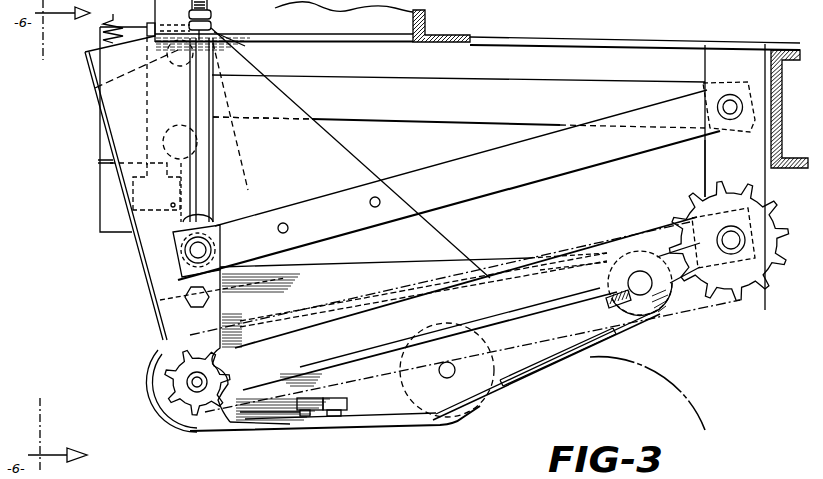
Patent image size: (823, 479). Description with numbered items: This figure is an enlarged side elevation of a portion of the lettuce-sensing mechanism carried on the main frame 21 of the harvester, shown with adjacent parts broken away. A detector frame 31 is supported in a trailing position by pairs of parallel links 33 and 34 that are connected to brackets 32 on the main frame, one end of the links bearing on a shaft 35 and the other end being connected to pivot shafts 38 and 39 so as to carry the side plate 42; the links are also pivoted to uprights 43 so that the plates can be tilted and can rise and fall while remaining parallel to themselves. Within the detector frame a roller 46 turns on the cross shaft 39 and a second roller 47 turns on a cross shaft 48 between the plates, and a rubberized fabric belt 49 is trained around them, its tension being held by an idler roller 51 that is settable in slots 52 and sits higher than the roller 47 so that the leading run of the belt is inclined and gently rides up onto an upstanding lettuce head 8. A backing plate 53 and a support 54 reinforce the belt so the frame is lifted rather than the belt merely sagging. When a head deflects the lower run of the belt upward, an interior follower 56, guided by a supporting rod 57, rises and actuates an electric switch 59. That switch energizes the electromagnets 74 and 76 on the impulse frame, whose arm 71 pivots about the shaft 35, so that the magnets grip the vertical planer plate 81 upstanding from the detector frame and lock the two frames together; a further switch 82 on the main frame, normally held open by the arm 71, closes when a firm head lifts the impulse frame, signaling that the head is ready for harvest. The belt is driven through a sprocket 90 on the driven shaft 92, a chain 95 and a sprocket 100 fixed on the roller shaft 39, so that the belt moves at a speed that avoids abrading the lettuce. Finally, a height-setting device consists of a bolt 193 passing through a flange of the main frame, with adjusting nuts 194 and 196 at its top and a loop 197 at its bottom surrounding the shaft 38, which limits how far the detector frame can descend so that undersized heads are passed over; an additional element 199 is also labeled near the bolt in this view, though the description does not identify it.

The lettuce head 8 is at (678, 385).
The main frame 21 is at (470, 38).
The detector frame 31 is at (504, 186).
The brackets 32 is at (704, 172).
The parallel links 33 is at (610, 152).
The parallel links 34 is at (626, 250).
The shaft 35 is at (725, 101).
The pivot shaft 38 is at (183, 298).
The pivot shaft 39 is at (190, 381).
The side plate 42 is at (360, 255).
The uprights 43 is at (214, 311).
The roller 46 is at (218, 432).
The roller 47 is at (436, 410).
The cross shaft 48 is at (452, 362).
The belt 49 is at (368, 425).
The idler roller 51 is at (664, 304).
The slots 52 is at (624, 322).
The backing plate 53 is at (552, 368).
The support 54 is at (570, 350).
The follower 56 is at (262, 430).
The supporting rod 57 is at (335, 418).
The electric switch 59 is at (302, 417).
The arm 71 is at (467, 82).
The electromagnet 74 is at (95, 90).
The electromagnet 76 is at (162, 139).
The planer plate 81 is at (245, 153).
The electrical switch 82 is at (173, 205).
The sprocket 90 is at (730, 308).
The driven shaft 92 is at (727, 228).
The chain 95 is at (502, 258).
The sprocket 100 is at (163, 390).
The bolt 193 is at (212, 82).
The adjusting nut 194 is at (210, 14).
The adjusting nut 196 is at (238, 42).
The loop 197 is at (208, 222).
The hidden link 199 is at (184, 107).